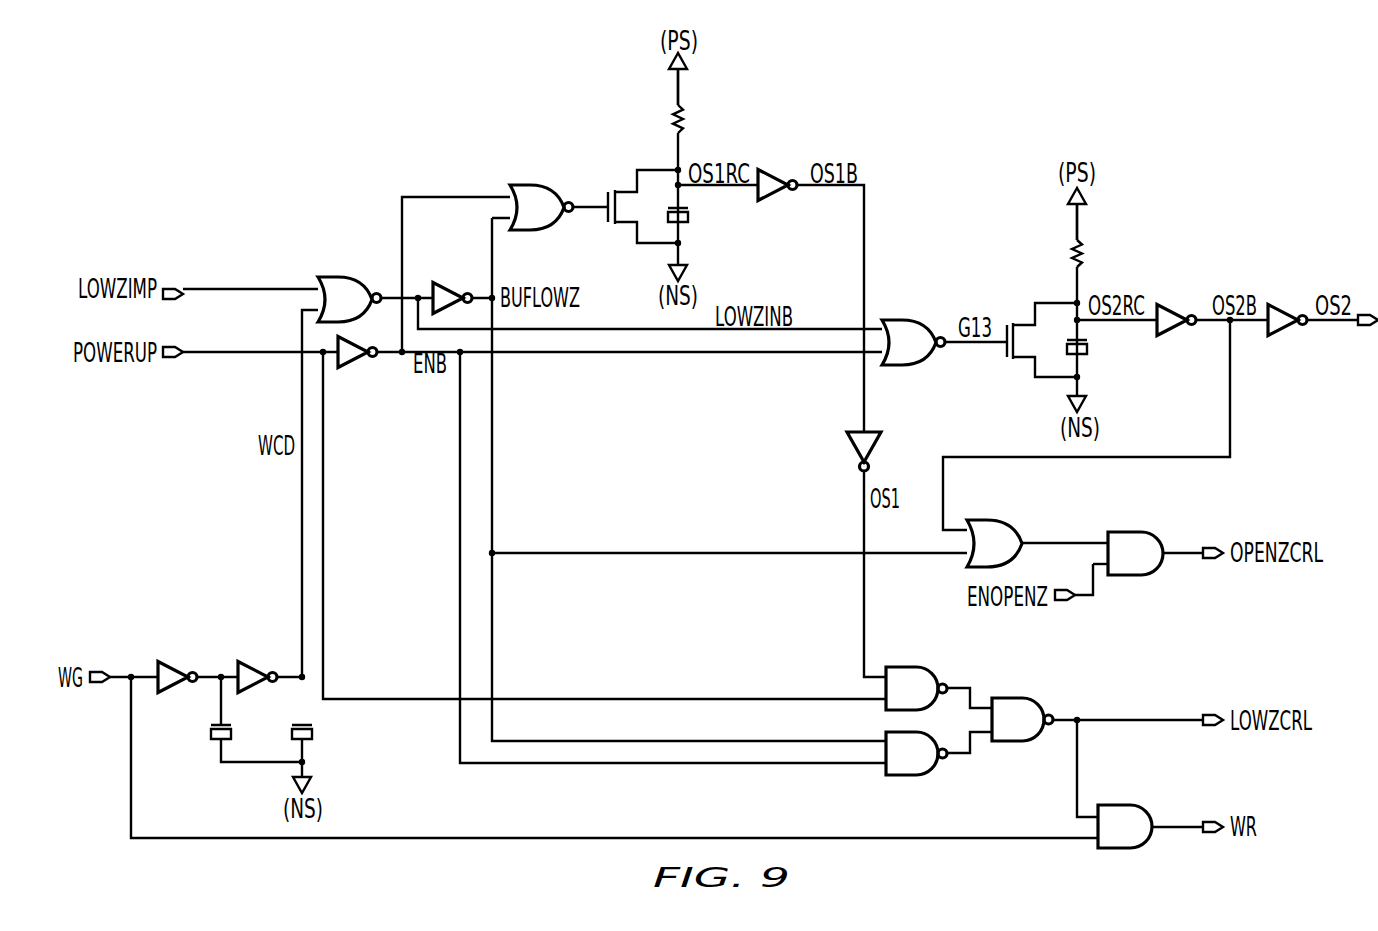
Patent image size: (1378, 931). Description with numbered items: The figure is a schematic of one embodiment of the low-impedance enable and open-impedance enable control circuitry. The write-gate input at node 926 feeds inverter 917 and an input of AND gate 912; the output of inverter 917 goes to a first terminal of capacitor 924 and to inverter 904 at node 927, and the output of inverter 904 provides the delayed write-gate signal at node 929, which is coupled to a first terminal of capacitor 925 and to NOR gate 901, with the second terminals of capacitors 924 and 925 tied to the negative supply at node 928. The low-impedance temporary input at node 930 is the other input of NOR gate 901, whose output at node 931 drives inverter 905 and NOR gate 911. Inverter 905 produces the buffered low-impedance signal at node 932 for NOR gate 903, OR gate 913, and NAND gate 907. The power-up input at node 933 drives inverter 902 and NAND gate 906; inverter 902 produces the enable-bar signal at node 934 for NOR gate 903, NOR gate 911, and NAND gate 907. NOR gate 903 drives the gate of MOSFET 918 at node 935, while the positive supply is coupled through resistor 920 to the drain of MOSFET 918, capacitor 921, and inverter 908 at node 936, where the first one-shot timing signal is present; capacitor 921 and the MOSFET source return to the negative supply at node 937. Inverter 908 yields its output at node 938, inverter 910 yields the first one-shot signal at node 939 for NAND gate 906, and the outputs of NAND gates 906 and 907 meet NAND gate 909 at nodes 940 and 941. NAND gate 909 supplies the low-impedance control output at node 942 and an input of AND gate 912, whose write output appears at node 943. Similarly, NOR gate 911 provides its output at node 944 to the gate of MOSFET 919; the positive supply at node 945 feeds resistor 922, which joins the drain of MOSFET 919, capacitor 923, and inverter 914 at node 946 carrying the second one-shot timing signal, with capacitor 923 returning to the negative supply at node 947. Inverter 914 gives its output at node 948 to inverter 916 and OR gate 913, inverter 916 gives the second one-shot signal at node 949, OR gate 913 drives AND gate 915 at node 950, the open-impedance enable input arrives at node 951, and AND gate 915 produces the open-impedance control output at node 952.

The NOR gate 901 is at (352, 277).
The inverter 902 is at (355, 364).
The NOR gate 903 is at (533, 185).
The inverter 904 is at (256, 666).
The inverter 905 is at (447, 285).
The NAND gate 906 is at (903, 666).
The NAND gate 907 is at (903, 777).
The inverter 908 is at (777, 175).
The NAND gate 909 is at (1012, 698).
The inverter 910 is at (855, 450).
The NOR gate 911 is at (910, 320).
The AND gate 912 is at (1120, 805).
The OR gate 913 is at (988, 520).
The inverter 914 is at (1175, 310).
The AND gate 915 is at (1128, 531).
The inverter 916 is at (1286, 310).
The inverter 917 is at (176, 666).
The MOSFET 918 is at (626, 189).
The MOSFET 919 is at (1024, 322).
The resistor 920 is at (684, 113).
The capacitor 921 is at (689, 218).
The resistor 922 is at (1083, 250).
The capacitor 923 is at (1089, 349).
The capacitor 924 is at (210, 735).
The capacitor 925 is at (313, 735).
The node 926 is at (119, 677).
The node 927 is at (220, 704).
The node 928 is at (253, 763).
The node 929 is at (301, 512).
The node 930 is at (238, 288).
The node 931 is at (811, 327).
The node 932 is at (493, 432).
The node 933 is at (324, 548).
The node 934 is at (812, 353).
The node 935 is at (677, 90).
The node 936 is at (663, 168).
The node 937 is at (648, 246).
The node 938 is at (817, 190).
The node 939 is at (863, 597).
The node 940 is at (961, 684).
The node 941 is at (961, 756).
The node 942 is at (1135, 718).
The node 943 is at (1178, 834).
The node 944 is at (980, 347).
The node 945 is at (1076, 228).
The node 946 is at (1063, 301).
The node 947 is at (1043, 380).
The node 948 is at (1231, 386).
The node 949 is at (1330, 325).
The node 950 is at (1071, 541).
The node 951 is at (1096, 586).
The node 952 is at (1183, 555).